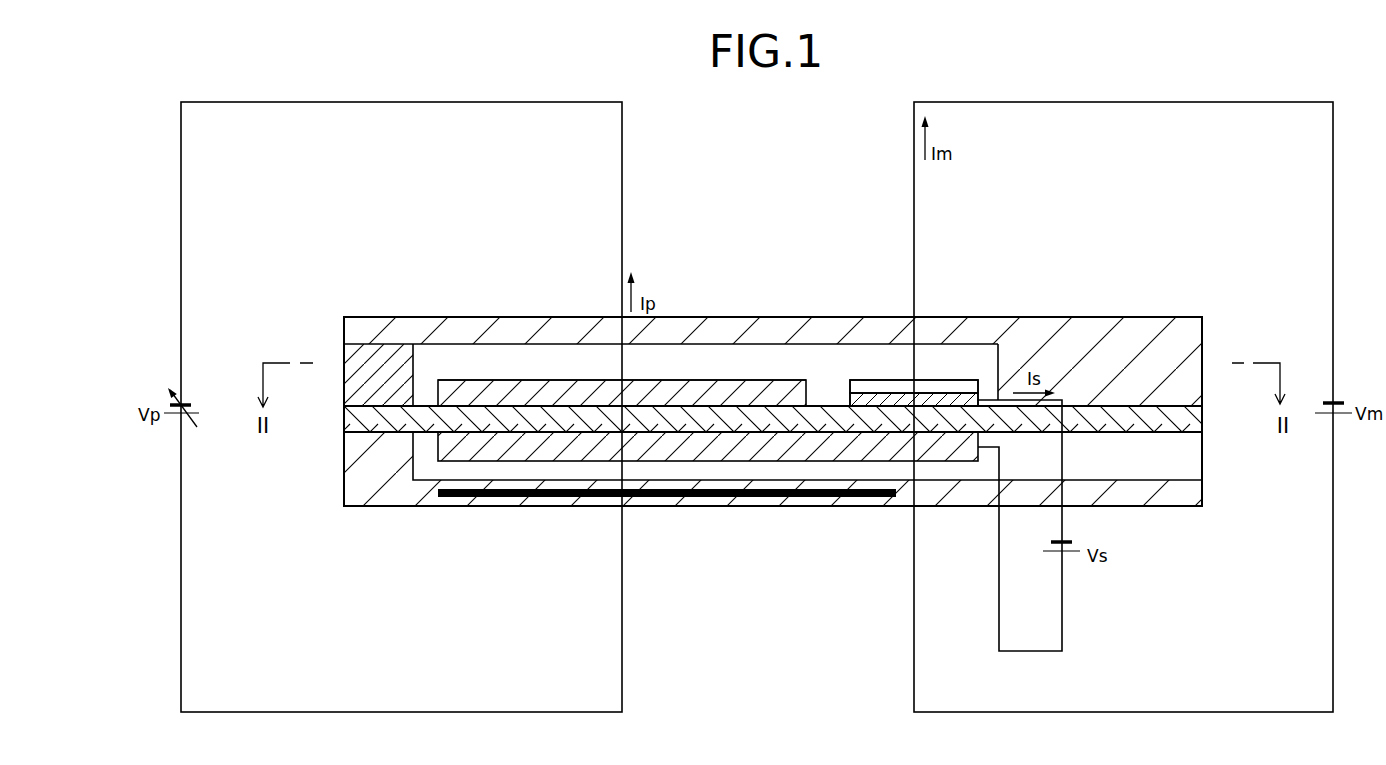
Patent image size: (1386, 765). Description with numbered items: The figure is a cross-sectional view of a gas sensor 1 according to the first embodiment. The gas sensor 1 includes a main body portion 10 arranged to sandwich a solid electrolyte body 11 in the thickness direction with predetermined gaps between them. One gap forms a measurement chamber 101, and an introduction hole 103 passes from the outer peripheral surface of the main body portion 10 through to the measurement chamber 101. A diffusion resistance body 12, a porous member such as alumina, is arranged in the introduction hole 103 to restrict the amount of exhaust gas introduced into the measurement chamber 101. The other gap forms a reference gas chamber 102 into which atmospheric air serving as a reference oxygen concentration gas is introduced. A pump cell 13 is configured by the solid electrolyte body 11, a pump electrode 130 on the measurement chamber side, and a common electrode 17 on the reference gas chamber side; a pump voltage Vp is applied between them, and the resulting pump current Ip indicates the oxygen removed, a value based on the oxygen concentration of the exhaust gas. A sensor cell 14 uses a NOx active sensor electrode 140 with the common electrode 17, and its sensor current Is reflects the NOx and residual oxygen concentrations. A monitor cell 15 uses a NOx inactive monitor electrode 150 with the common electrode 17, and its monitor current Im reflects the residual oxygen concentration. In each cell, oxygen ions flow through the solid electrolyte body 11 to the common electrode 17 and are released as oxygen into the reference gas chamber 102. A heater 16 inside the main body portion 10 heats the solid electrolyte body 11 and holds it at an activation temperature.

The gas sensor 1 is at (388, 191).
The main body portion 10 is at (1165, 317).
The solid electrolyte body 11 is at (1162, 432).
The diffusion resistance body 12 is at (343, 396).
The pump cell 13 is at (527, 376).
The pump electrode 130 is at (470, 380).
The sensor cell 14 is at (873, 388).
The sensor electrode 140 is at (893, 397).
The monitor cell 15 is at (968, 376).
The monitor electrode 150 is at (953, 378).
The heater 16 is at (510, 497).
The common electrode 17 is at (580, 462).
The measurement chamber 101 is at (715, 353).
The reference gas chamber 102 is at (680, 480).
The introduction hole 103 is at (343, 358).